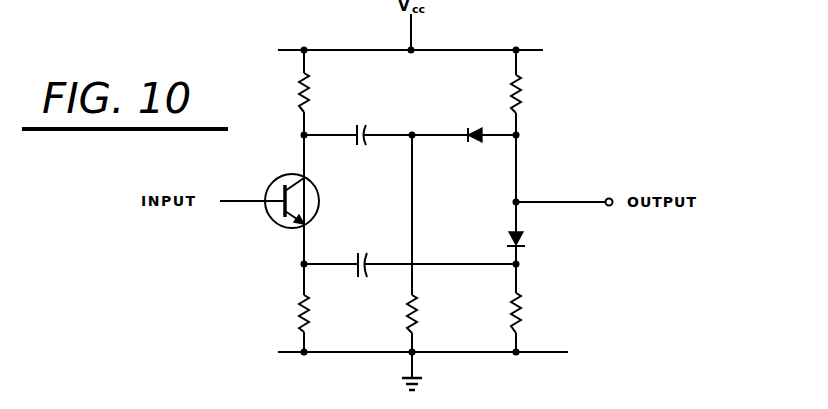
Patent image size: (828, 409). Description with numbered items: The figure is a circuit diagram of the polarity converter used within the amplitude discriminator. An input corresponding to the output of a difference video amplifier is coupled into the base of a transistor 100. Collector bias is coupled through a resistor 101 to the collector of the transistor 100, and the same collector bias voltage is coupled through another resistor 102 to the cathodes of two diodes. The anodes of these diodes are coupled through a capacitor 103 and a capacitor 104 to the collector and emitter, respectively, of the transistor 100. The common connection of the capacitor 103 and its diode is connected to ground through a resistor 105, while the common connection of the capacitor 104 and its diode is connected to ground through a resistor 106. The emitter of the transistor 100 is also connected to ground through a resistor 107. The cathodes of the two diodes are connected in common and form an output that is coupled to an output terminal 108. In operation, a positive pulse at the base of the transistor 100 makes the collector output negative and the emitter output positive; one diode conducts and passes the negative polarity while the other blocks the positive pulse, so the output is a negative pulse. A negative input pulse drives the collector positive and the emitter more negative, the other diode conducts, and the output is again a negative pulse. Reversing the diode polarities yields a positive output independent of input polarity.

The transistor 100 is at (296, 175).
The resistor 101 is at (310, 101).
The resistor 102 is at (521, 101).
The capacitor 103 is at (362, 127).
The capacitor 104 is at (372, 241).
The resistor 105 is at (418, 318).
The resistor 106 is at (523, 318).
The resistor 107 is at (303, 316).
The output terminal 108 is at (611, 198).